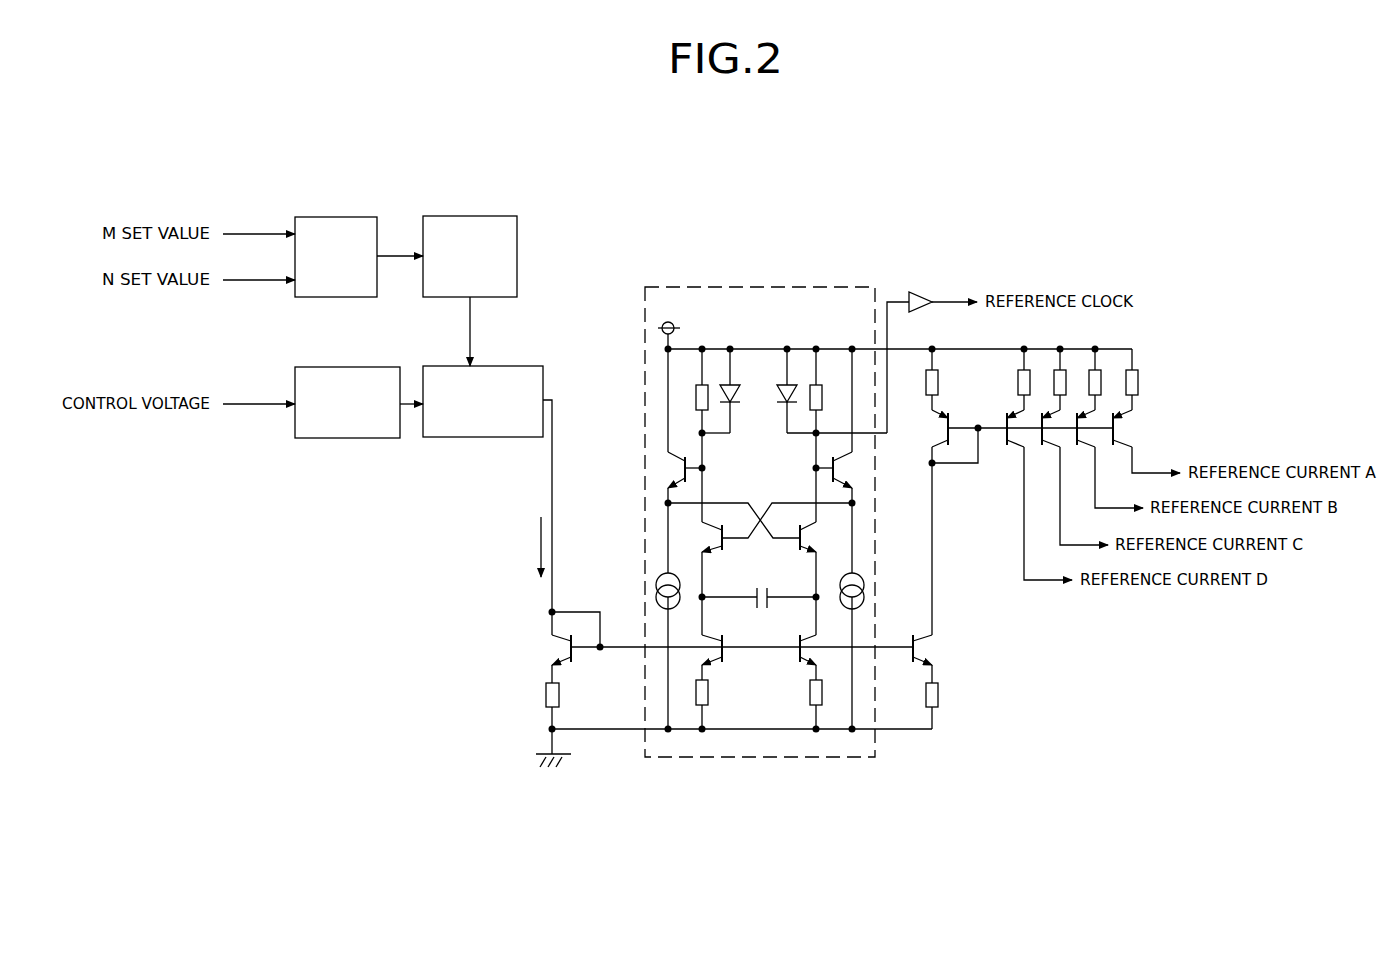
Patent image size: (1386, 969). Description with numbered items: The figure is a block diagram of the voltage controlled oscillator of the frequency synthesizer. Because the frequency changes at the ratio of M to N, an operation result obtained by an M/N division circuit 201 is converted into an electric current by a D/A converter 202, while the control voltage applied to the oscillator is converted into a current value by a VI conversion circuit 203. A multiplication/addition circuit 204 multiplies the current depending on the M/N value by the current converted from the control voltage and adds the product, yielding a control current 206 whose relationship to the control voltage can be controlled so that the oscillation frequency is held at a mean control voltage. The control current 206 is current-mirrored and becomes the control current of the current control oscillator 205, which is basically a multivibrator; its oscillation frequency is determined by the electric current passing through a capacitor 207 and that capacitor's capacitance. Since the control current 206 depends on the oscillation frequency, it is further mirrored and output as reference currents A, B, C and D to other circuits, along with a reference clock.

The M/N division circuit 201 is at (336, 247).
The D/A converter 202 is at (473, 246).
The VI conversion circuit 203 is at (347, 391).
The multiplication/addition circuit 204 is at (483, 392).
The current control oscillator 205 is at (888, 497).
The control current 206 is at (467, 517).
The capacitor 207 is at (759, 587).